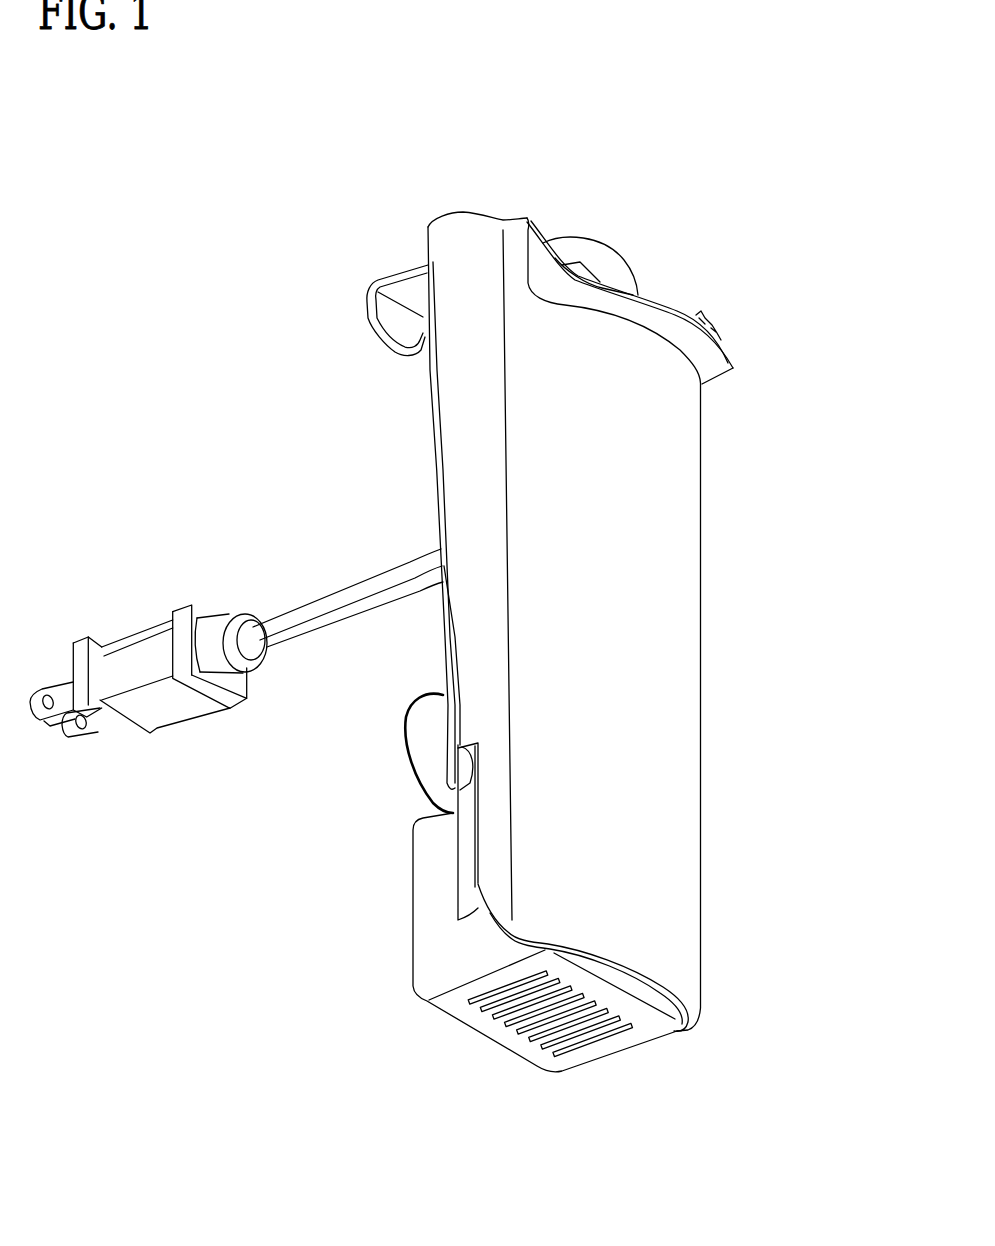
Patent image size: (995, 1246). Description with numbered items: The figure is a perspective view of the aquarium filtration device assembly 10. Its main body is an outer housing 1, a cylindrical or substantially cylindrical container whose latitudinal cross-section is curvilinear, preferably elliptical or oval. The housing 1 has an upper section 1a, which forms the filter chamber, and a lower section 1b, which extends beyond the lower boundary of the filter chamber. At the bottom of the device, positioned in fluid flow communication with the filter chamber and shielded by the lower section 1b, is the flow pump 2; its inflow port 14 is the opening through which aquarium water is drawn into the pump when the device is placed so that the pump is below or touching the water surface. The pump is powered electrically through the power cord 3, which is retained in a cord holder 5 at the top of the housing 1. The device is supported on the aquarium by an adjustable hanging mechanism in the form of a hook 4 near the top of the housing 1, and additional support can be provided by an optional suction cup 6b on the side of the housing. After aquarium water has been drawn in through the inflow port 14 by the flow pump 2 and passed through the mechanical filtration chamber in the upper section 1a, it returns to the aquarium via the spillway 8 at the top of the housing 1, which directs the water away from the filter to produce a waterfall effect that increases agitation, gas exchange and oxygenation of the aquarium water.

The outer housing 1 is at (668, 620).
The upper section 1a is at (678, 418).
The lower section 1b is at (663, 902).
The flow pump 2 is at (438, 962).
The power cord 3 is at (283, 618).
The hook 4 is at (385, 280).
The cord holder 5 is at (597, 258).
The suction cup 6b is at (427, 742).
The spillway 8 is at (670, 310).
The filtration device assembly 10 is at (777, 759).
The inflow port 14 is at (560, 1017).